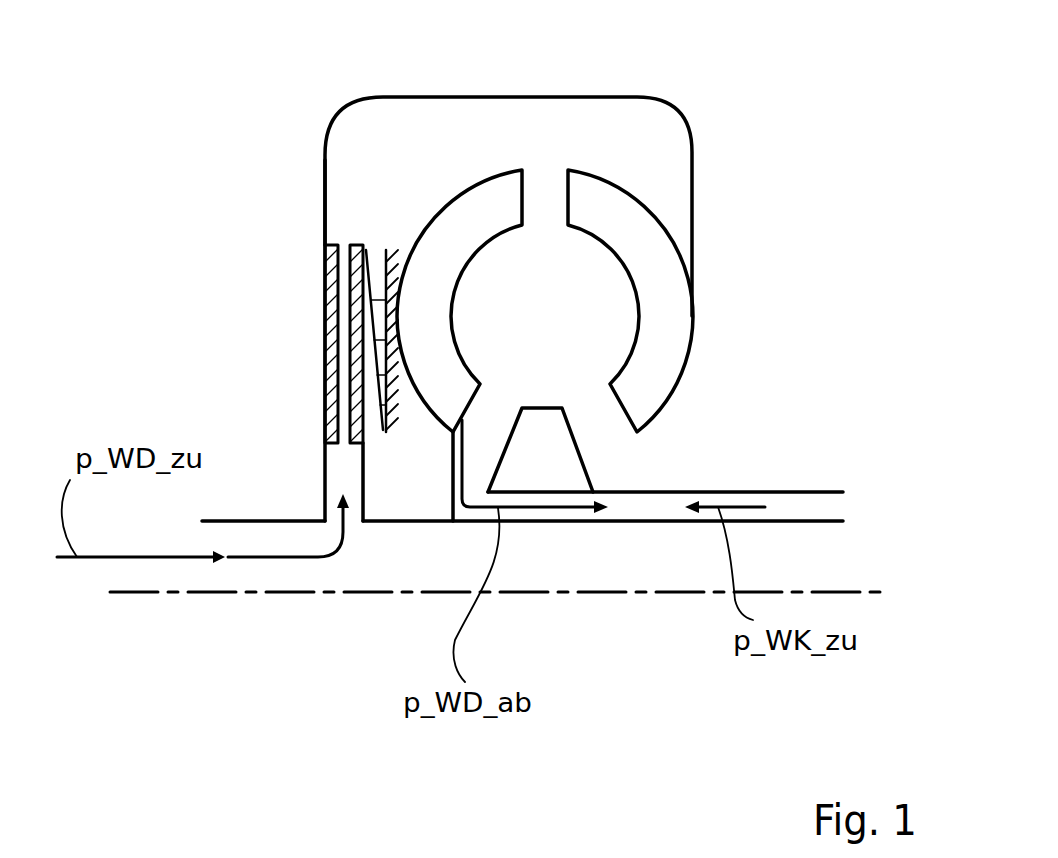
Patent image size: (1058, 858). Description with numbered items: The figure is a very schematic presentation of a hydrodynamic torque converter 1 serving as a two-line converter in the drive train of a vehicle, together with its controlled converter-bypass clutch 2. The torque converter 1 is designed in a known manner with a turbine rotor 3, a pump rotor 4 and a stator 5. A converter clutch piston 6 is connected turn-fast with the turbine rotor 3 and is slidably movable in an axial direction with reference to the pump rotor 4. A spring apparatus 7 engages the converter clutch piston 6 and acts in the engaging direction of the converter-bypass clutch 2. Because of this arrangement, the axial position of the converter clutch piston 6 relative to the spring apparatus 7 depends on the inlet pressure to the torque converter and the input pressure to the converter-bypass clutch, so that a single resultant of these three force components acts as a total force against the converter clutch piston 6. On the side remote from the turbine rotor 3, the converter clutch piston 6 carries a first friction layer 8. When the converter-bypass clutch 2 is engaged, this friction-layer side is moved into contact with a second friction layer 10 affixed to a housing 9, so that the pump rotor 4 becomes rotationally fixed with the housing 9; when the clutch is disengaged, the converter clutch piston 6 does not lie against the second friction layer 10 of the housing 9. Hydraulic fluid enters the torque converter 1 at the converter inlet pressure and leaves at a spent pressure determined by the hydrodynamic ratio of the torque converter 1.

The hydrodynamic torque converter 1 is at (755, 168).
The converter-bypass clutch 2 is at (274, 322).
The turbine rotor 3 is at (447, 233).
The pump rotor 4 is at (618, 223).
The stator 5 is at (552, 460).
The converter clutch piston 6 is at (362, 433).
The spring apparatus 7 is at (380, 400).
The first friction layer 8 is at (359, 245).
The housing 9 is at (325, 222).
The second friction layer 10 is at (327, 277).